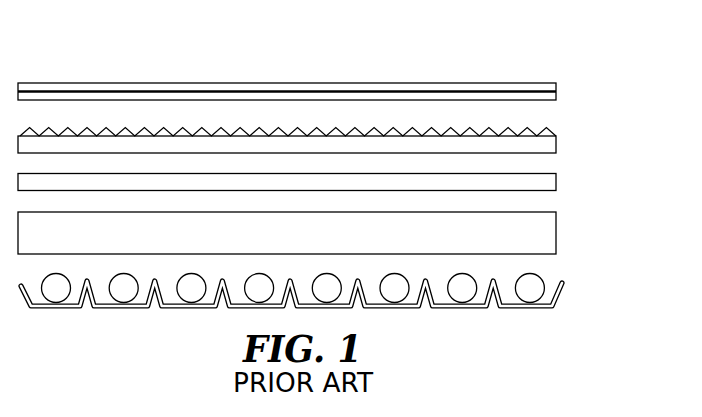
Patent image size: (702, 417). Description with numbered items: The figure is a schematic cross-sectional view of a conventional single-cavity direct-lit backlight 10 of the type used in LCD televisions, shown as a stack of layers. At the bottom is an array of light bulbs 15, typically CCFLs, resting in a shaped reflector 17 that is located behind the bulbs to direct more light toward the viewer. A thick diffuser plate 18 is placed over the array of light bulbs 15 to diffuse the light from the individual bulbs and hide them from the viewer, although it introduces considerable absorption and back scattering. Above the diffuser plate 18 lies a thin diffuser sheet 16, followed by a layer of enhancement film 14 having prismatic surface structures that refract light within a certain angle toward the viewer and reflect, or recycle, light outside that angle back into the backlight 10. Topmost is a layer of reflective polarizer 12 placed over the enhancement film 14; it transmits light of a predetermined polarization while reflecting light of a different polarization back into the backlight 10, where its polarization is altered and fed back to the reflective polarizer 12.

The direct-lit backlight 10 is at (472, 56).
The reflective polarizer 12 is at (556, 87).
The enhancement film 14 is at (548, 141).
The diffuser sheet 16 is at (548, 180).
The diffuser plate 18 is at (545, 230).
The light bulbs 15 is at (549, 276).
The shaped reflector 17 is at (560, 296).